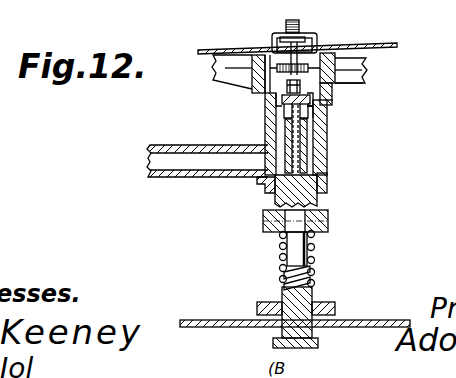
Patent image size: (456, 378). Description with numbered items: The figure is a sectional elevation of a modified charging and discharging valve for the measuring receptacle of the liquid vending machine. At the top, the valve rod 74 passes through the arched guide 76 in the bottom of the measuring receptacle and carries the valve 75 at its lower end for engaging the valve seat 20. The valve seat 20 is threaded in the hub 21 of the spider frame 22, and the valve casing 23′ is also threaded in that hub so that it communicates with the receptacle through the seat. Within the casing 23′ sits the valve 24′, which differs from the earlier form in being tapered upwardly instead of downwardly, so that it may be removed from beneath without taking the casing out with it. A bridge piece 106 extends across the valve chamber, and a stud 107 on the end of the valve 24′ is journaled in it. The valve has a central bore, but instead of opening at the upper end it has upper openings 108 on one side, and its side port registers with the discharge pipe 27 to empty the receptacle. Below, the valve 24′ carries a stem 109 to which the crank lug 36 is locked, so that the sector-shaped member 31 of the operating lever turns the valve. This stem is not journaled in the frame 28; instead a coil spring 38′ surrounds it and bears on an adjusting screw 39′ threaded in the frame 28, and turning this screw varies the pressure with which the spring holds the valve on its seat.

The valve rod 74 is at (297, 21).
The arched guide 76 is at (276, 36).
The valve 75 is at (305, 49).
The valve seat 20 is at (228, 189).
The hub 21 is at (354, 70).
The spider frame 22 is at (355, 84).
The valve casing 23′ is at (325, 138).
The bridge piece 106 is at (322, 100).
The stud 107 is at (286, 90).
The upper openings 108 is at (281, 103).
The discharge pipe 27 is at (187, 145).
The valve 24′ is at (307, 181).
The crank lug 36 is at (329, 216).
The stem 109 is at (300, 254).
The coil spring 38′ is at (279, 260).
The sector-shaped member 31 is at (332, 302).
The frame 28 is at (372, 320).
The adjusting screw 39′ is at (298, 344).